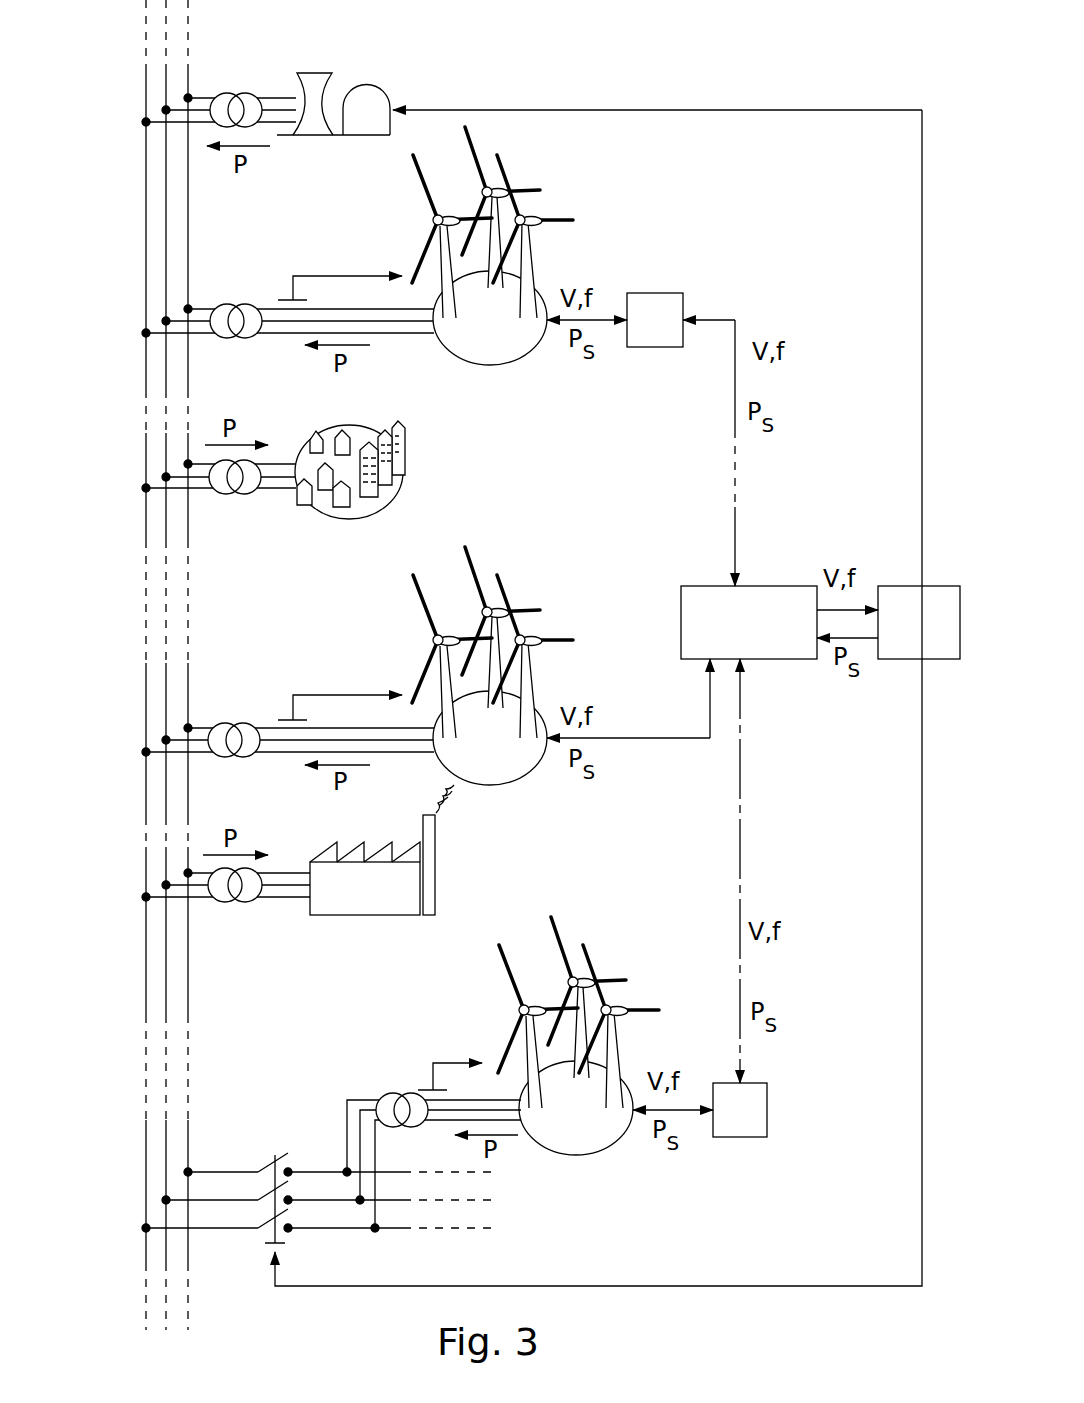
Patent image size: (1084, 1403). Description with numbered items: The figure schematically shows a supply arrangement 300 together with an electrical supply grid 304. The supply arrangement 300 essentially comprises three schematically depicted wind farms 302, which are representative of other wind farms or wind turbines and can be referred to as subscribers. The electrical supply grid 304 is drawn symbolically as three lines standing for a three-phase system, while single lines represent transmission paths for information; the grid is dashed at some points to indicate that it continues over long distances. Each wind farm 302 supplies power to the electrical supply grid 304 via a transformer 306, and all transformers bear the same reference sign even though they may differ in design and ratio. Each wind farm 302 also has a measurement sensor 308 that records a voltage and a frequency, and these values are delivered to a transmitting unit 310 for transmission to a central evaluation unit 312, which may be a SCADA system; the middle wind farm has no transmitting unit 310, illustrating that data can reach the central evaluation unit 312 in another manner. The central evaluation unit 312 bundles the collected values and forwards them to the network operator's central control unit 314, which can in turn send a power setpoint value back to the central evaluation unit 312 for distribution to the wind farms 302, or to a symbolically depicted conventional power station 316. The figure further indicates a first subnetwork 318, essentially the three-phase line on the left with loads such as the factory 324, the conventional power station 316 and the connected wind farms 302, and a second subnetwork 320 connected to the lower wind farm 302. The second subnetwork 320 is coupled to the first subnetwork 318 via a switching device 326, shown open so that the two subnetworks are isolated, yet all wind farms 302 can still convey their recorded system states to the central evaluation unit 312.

The supply arrangement 300 is at (761, 233).
The wind farm 302 is at (503, 375).
The electrical supply grid 304 is at (115, 422).
The transformer 306 is at (238, 92).
The measurement sensor 308 is at (283, 298).
The transmitting unit 310 is at (647, 292).
The central evaluation unit 312 is at (763, 597).
The central control unit 314 is at (897, 657).
The conventional power station 316 is at (315, 72).
The first subnetwork 318 is at (105, 930).
The second subnetwork 320 is at (385, 1237).
The factory 324 is at (356, 930).
The switching device 326 is at (275, 1147).